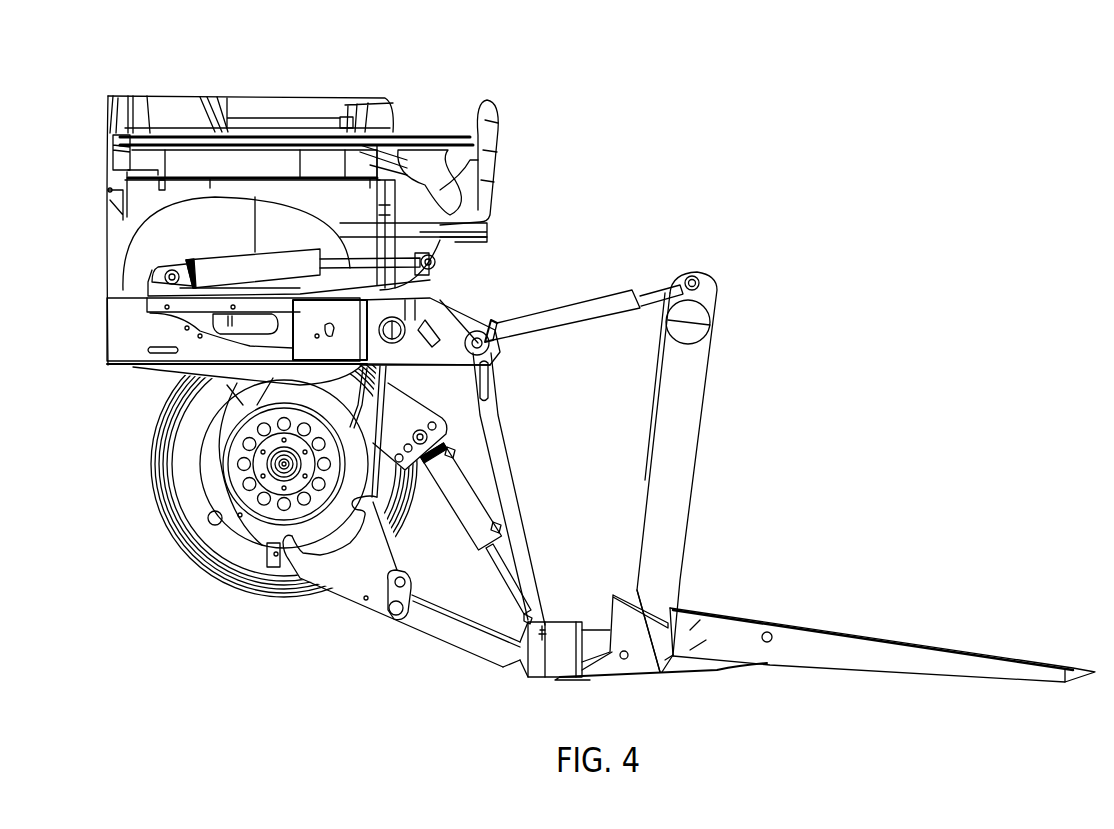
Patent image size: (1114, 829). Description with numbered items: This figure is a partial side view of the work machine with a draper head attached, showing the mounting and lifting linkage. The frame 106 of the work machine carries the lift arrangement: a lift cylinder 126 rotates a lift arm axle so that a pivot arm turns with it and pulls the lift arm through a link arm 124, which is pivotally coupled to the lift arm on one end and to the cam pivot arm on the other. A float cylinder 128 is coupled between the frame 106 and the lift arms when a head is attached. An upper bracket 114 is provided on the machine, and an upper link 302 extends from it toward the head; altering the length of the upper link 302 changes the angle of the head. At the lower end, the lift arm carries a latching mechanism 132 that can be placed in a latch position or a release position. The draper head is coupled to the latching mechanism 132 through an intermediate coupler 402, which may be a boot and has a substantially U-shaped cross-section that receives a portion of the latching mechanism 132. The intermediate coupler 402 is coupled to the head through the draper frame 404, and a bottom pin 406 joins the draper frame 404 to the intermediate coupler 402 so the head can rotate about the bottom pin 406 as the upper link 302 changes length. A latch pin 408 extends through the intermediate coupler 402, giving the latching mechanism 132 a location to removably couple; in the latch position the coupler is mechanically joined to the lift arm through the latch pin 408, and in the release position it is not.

The frame 106 is at (302, 330).
The upper bracket 114 is at (462, 337).
The link arm 124 is at (513, 483).
The lift cylinder 126 is at (275, 272).
The float cylinder 128 is at (465, 522).
The latching mechanism 132 is at (600, 642).
The upper link 302 is at (590, 308).
The intermediate coupler 402 is at (655, 675).
The draper frame 404 is at (947, 663).
The bottom pin 406 is at (768, 631).
The latch pin 408 is at (626, 660).